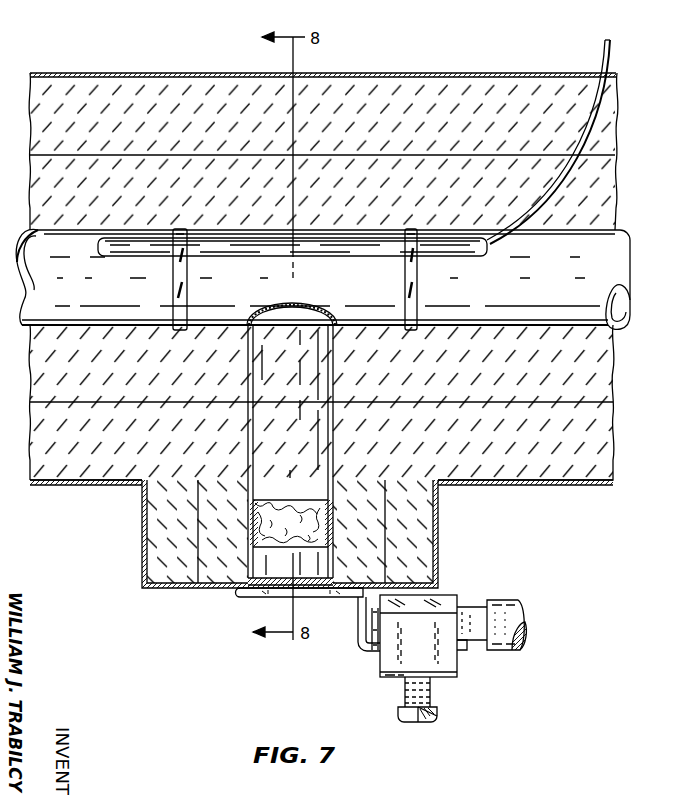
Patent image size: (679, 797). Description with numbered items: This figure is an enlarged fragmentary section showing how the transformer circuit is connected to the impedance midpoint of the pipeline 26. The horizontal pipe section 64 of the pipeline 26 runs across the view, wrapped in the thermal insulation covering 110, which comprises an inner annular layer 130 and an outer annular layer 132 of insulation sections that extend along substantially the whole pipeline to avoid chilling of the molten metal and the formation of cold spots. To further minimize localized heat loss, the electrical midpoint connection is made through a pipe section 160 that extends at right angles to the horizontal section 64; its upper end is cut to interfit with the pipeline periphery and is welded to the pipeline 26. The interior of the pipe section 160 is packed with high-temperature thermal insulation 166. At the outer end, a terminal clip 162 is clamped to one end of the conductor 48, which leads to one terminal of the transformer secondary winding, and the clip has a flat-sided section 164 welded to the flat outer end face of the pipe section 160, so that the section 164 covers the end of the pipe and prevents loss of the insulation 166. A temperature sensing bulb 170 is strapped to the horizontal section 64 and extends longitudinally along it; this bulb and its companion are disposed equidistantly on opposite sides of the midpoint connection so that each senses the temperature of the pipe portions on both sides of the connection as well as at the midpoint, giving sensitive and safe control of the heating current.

The pipeline 26 is at (580, 332).
The conductor 48 is at (503, 652).
The horizontal pipe section 64 is at (598, 229).
The thermal insulation covering 110 is at (568, 487).
The inner annular layer 130 is at (582, 403).
The outer annular layer 132 is at (480, 485).
The pipe section 160 is at (248, 565).
The terminal clip 162 is at (391, 679).
The flat-sided section 164 is at (326, 598).
The thermal insulation 166 is at (307, 533).
The temperature sensing bulb 170 is at (462, 258).